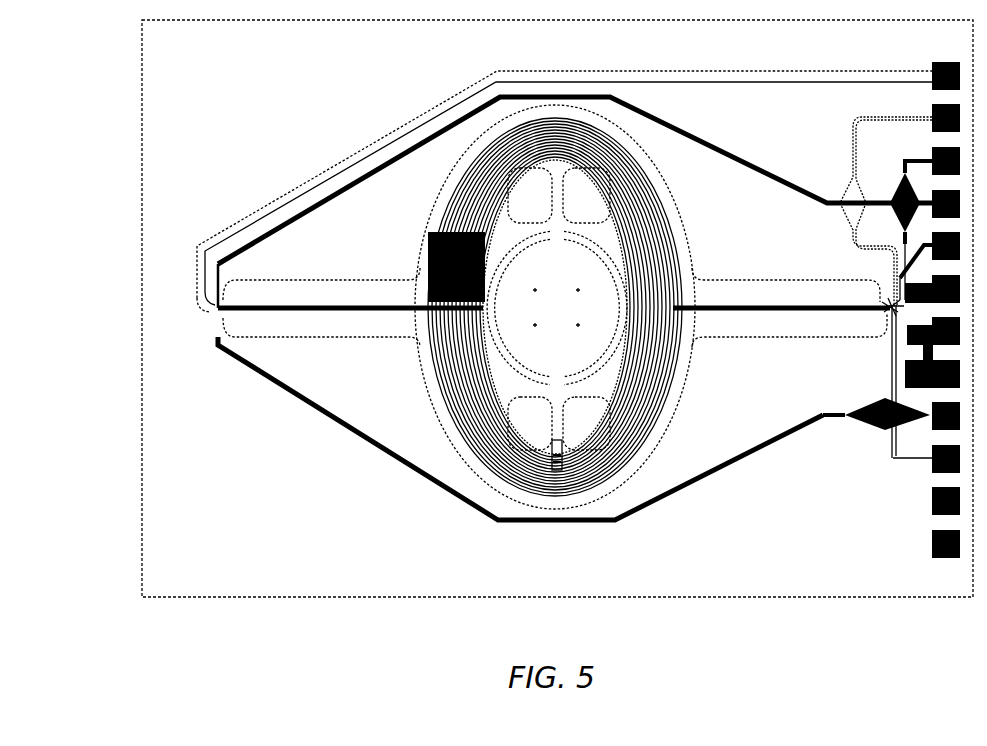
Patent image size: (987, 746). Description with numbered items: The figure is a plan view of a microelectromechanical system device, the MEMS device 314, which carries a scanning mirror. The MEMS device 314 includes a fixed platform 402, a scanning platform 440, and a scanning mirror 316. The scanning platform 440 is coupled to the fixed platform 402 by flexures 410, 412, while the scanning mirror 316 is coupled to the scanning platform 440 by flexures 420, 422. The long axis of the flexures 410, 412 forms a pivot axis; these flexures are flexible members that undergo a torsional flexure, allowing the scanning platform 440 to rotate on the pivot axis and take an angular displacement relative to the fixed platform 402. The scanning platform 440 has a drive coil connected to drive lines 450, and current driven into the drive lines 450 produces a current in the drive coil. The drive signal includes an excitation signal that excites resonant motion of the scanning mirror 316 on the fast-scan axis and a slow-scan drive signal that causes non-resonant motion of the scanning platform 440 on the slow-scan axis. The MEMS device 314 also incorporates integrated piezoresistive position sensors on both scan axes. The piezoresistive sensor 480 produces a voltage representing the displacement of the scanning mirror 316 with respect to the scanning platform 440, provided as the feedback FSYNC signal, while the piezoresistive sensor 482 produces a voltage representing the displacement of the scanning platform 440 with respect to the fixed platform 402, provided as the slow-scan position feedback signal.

The MEMS device 314 is at (96, 598).
The fixed platform 402 is at (259, 106).
The flexure 410 is at (300, 308).
The flexure 412 is at (757, 308).
The drive lines 450 is at (762, 165).
The scanning platform 440 is at (683, 418).
The scanning mirror 316 is at (572, 314).
The flexure 420 is at (566, 181).
The flexure 422 is at (566, 440).
The piezoresistive sensor 480 is at (552, 445).
The piezoresistive sensor 482 is at (882, 316).